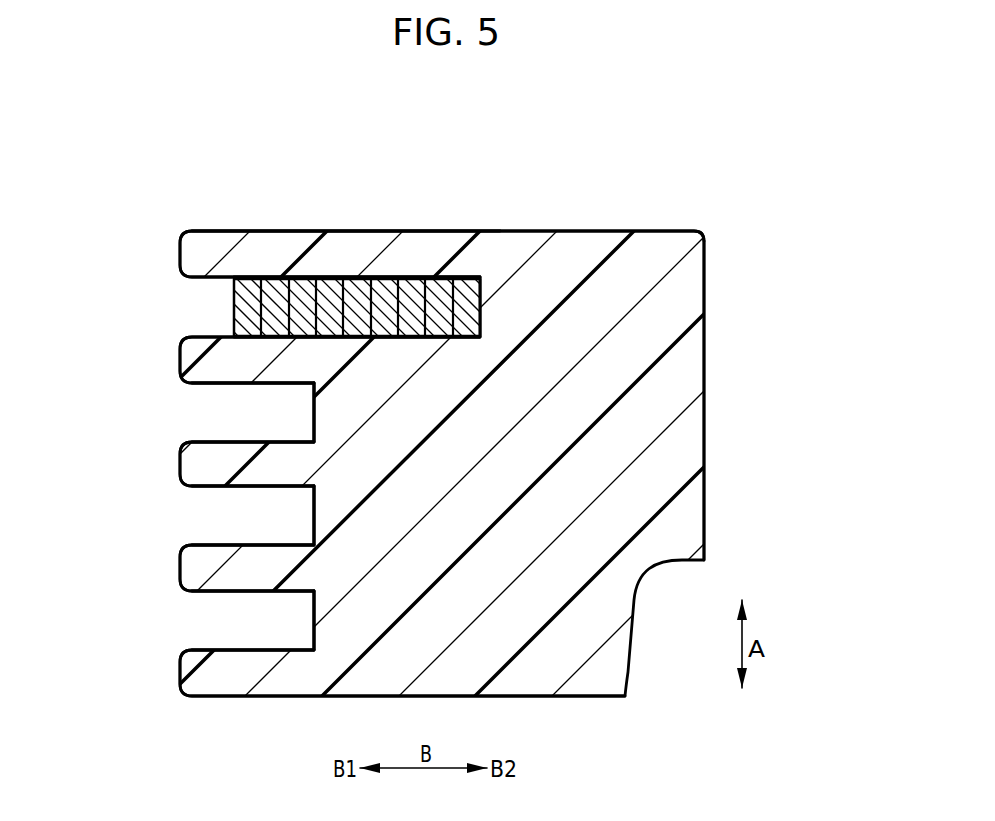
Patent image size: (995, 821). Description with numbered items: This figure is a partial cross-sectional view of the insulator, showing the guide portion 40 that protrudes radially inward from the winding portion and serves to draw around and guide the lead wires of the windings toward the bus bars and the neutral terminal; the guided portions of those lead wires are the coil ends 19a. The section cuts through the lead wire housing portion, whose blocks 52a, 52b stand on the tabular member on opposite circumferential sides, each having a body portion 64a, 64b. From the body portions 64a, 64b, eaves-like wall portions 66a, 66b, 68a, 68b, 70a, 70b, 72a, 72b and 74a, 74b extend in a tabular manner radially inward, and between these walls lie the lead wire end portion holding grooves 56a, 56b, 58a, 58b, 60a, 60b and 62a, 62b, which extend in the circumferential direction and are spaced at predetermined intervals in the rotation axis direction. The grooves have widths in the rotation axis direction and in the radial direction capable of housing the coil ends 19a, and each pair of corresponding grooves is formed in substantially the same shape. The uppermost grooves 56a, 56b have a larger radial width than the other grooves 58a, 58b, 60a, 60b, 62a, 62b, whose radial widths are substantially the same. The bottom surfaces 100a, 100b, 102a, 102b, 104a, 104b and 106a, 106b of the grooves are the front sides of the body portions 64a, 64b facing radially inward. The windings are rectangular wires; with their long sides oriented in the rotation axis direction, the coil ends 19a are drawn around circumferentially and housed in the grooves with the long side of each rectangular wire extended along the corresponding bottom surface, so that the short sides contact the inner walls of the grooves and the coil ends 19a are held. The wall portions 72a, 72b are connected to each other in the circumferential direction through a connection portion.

The guide portion 40 is at (661, 229).
The coil end 19a is at (275, 292).
The bottom surface 100a is at (356, 254).
The bottom surface 100b is at (356, 254).
The block 52a is at (448, 214).
The block 52b is at (557, 231).
The body portion 64a is at (750, 400).
The body portion 64b is at (680, 407).
The wall portion 66a is at (281, 254).
The wall portion 66b is at (195, 250).
The lead wire end portion holding groove 56a is at (281, 307).
The lead wire end portion holding groove 56b is at (221, 307).
The wall portion 68a is at (271, 360).
The wall portion 68b is at (195, 357).
The lead wire end portion holding groove 58a is at (190, 411).
The lead wire end portion holding groove 58b is at (201, 403).
The bottom surface 102a is at (240, 412).
The bottom surface 102b is at (313, 420).
The wall portion 70a is at (188, 464).
The wall portion 70b is at (195, 468).
The lead wire end portion holding groove 60a is at (190, 515).
The lead wire end portion holding groove 60b is at (203, 510).
The bottom surface 104a is at (237, 515).
The bottom surface 104b is at (313, 521).
The wall portion 72a is at (188, 568).
The wall portion 72b is at (195, 571).
The lead wire end portion holding groove 62a is at (190, 619).
The lead wire end portion holding groove 62b is at (203, 612).
The bottom surface 106a is at (237, 620).
The bottom surface 106b is at (313, 627).
The wall portion 74a is at (344, 673).
The wall portion 74b is at (195, 668).